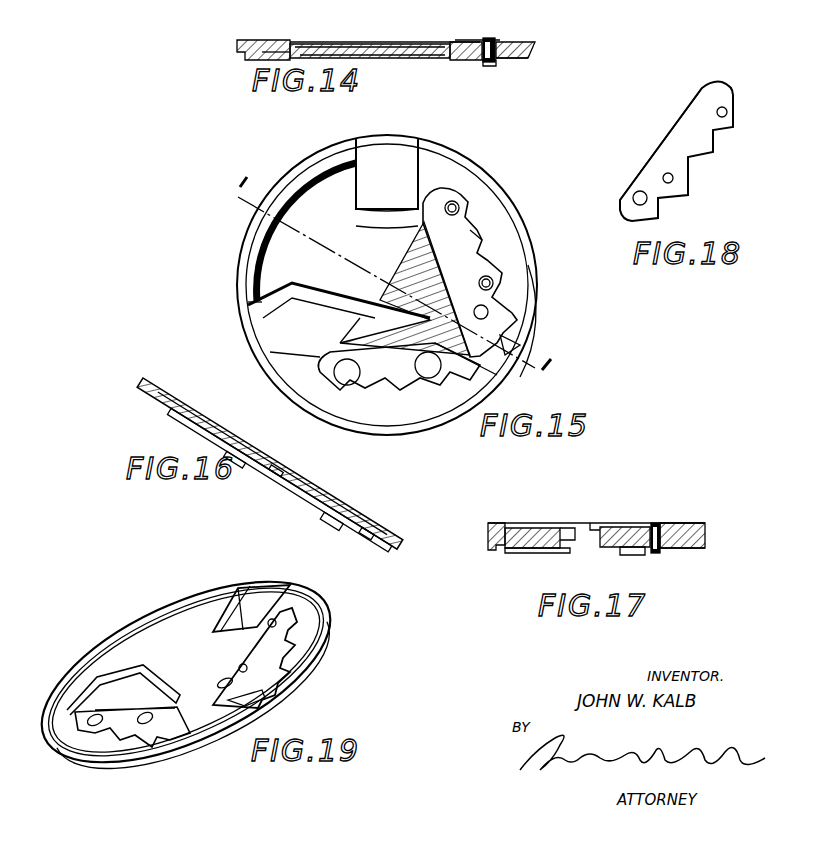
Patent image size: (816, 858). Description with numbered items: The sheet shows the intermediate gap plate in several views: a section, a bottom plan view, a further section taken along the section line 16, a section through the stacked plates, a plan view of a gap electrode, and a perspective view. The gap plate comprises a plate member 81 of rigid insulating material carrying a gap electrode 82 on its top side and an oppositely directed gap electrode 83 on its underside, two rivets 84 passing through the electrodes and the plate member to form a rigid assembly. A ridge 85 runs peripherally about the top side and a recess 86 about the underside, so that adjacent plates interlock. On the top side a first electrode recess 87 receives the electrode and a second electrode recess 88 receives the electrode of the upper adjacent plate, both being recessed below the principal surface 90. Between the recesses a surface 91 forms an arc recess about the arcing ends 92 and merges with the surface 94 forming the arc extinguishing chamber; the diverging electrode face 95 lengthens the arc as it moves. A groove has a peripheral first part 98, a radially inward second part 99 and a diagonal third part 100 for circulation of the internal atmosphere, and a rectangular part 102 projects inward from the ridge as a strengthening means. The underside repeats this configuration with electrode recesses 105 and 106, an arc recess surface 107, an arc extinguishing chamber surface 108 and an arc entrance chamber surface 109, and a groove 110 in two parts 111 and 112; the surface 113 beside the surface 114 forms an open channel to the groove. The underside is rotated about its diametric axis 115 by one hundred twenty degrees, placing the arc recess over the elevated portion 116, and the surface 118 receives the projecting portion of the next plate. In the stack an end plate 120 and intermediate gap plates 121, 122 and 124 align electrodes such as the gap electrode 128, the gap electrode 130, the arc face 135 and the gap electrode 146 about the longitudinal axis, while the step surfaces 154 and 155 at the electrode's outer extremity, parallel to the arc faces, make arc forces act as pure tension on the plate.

In FIG. 15, the section line 16— 16 is at (405, 259).
In FIG. 15, the plate member 81 is at (240, 250).
In FIG. 14, the gap electrode 82 is at (462, 42).
In FIG. 15, the gap electrode 82 is at (470, 230).
In FIG. 16, the gap electrode 82 is at (279, 479).
In FIG. 17, the gap electrode 82 is at (632, 528).
In FIG. 18, the gap electrode 82 is at (683, 118).
In FIG. 19, the gap electrode 82 is at (262, 700).
In FIG. 14, the gap electrode 83 is at (498, 58).
In FIG. 15, the gap electrode 83 is at (500, 295).
In FIG. 16, the gap electrode 83 is at (283, 490).
In FIG. 17, the gap electrode 83 is at (636, 553).
In FIG. 14, the rivets 84 is at (495, 42).
In FIG. 15, the rivets 84 is at (455, 205).
In FIG. 16, the rivets 84 is at (321, 502).
In FIG. 17, the rivets 84 is at (656, 524).
In FIG. 14, the ridge 85 is at (522, 42).
In FIG. 16, the ridge 85 is at (145, 388).
In FIG. 17, the ridge 85 is at (705, 523).
In FIG. 19, the ridge 85 is at (303, 668).
In FIG. 14, the recess 86 is at (528, 56).
In FIG. 15, the recess 86 is at (530, 263).
In FIG. 16, the recess 86 is at (152, 375).
In FIG. 17, the recess 86 is at (695, 549).
In FIG. 14, the first electrode recess 87 is at (477, 42).
In FIG. 19, the first electrode recess 87 is at (275, 640).
In FIG. 17, the second electrode recess 88 is at (565, 530).
In FIG. 19, the second electrode recess 88 is at (123, 735).
In FIG. 17, the principal surface 90 is at (540, 530).
In FIG. 19, the arc recess surface 91 is at (203, 723).
In FIG. 15, the arcing ends 92 is at (510, 315).
In FIG. 18, the arcing ends 92 is at (620, 205).
In FIG. 19, the arc extinguishing chamber surface 94 is at (175, 633).
In FIG. 18, the electrode face 95 is at (652, 150).
In FIG. 17, the first groove part 98 is at (508, 523).
In FIG. 19, the first groove part 98 is at (70, 688).
In FIG. 19, the second groove part 99 is at (120, 665).
In FIG. 19, the third groove part 100 is at (168, 685).
In FIG. 16, the rectangular part 102 is at (352, 518).
In FIG. 19, the rectangular part 102 is at (264, 595).
In FIG. 15, the electrode recess 105 is at (476, 235).
In FIG. 15, the electrode recess 106 is at (436, 380).
In FIG. 15, the arc recess surface 107 is at (500, 362).
In FIG. 16, the arc recess surface 107 is at (368, 520).
In FIG. 15, the arc extinguishing chamber surface 108 is at (374, 246).
In FIG. 16, the arc extinguishing chamber surface 108 is at (270, 463).
In FIG. 15, the arc entrance chamber surface 109 is at (405, 288).
In FIG. 16, the arc entrance chamber surface 109 is at (338, 502).
In FIG. 15, the groove 110 is at (291, 283).
In FIG. 14, the groove part 111 is at (240, 49).
In FIG. 15, the groove part 111 is at (274, 308).
In FIG. 17, the groove part 111 is at (490, 540).
In FIG. 15, the groove part 112 is at (350, 305).
In FIG. 15, the surface 113 is at (260, 352).
In FIG. 15, the surface 114 is at (392, 400).
In FIG. 15, the diametric axis 115 is at (300, 228).
In FIG. 15, the elevated portion 116 is at (392, 165).
In FIG. 14, the surface 118 is at (308, 44).
In FIG. 15, the surface 118 is at (262, 321).
In FIG. 14, the end plate 120 is at (285, 45).
In FIG. 17, the end plate 120 is at (700, 523).
In FIG. 17, the intermediate gap plate 121 is at (565, 552).
In FIG. 17, the intermediate gap plate 122 is at (597, 526).
In FIG. 14, the intermediate gap plate 124 is at (395, 42).
In FIG. 14, the gap electrode 128 is at (280, 42).
In FIG. 14, the gap electrode 130 is at (355, 44).
In FIG. 16, the arc face 135 is at (280, 448).
In FIG. 16, the gap electrode 146 is at (272, 463).
In FIG. 18, the step surface 154 is at (715, 148).
In FIG. 18, the step surface 155 is at (662, 210).